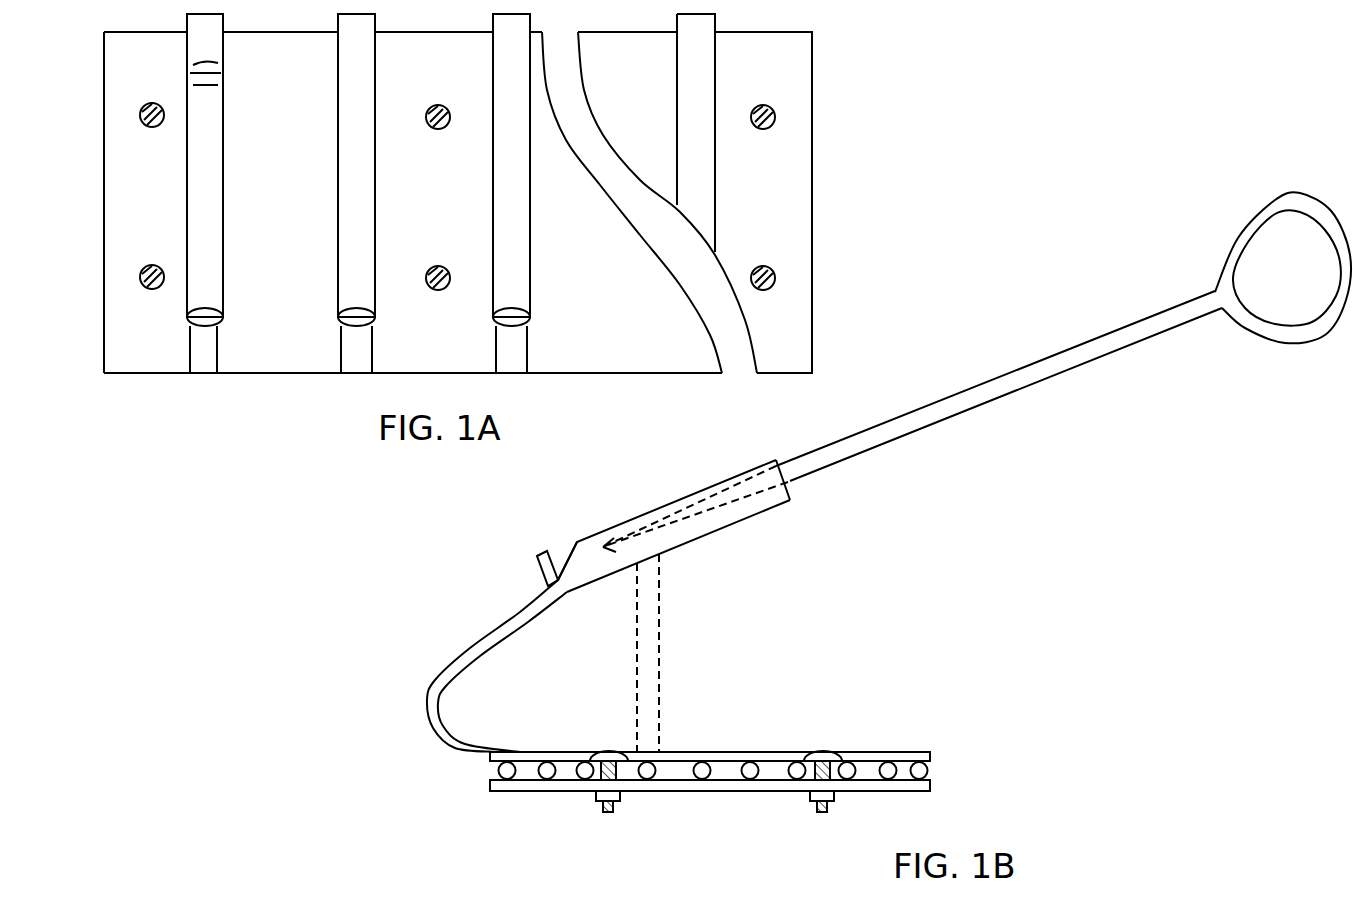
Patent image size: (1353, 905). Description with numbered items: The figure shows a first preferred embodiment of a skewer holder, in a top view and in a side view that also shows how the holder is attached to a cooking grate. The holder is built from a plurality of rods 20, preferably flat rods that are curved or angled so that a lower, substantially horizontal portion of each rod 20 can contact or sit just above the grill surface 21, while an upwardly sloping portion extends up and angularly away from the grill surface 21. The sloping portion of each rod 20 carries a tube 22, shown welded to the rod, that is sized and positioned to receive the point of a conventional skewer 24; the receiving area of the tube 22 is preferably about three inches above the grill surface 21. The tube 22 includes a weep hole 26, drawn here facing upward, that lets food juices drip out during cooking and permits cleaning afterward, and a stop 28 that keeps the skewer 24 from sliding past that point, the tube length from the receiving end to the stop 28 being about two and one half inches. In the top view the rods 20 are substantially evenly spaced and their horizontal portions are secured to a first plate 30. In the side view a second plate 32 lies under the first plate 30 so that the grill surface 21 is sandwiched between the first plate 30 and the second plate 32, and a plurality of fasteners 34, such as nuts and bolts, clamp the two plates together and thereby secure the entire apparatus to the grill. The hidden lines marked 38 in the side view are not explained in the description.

In FIG. 1A, the rod 20 is at (217, 346).
In FIG. 1B, the rod 20 is at (762, 512).
In FIG. 1B, the grill surface 21 is at (498, 774).
In FIG. 1A, the tube 22 is at (222, 194).
In FIG. 1B, the tube 22 is at (760, 462).
In FIG. 1B, the skewer 24 is at (705, 492).
In FIG. 1A, the weep hole 26 is at (224, 58).
In FIG. 1B, the weep hole 26 is at (560, 540).
In FIG. 1B, the stop 28 is at (537, 568).
In FIG. 1A, the first plate 30 is at (104, 182).
In FIG. 1B, the first plate 30 is at (900, 752).
In FIG. 1B, the second plate 32 is at (928, 791).
In FIG. 1A, the fastener 34 is at (152, 103).
In FIG. 1B, the fastener 34 is at (606, 751).
In FIG. 1B, the hidden passage lines 38 is at (660, 615).